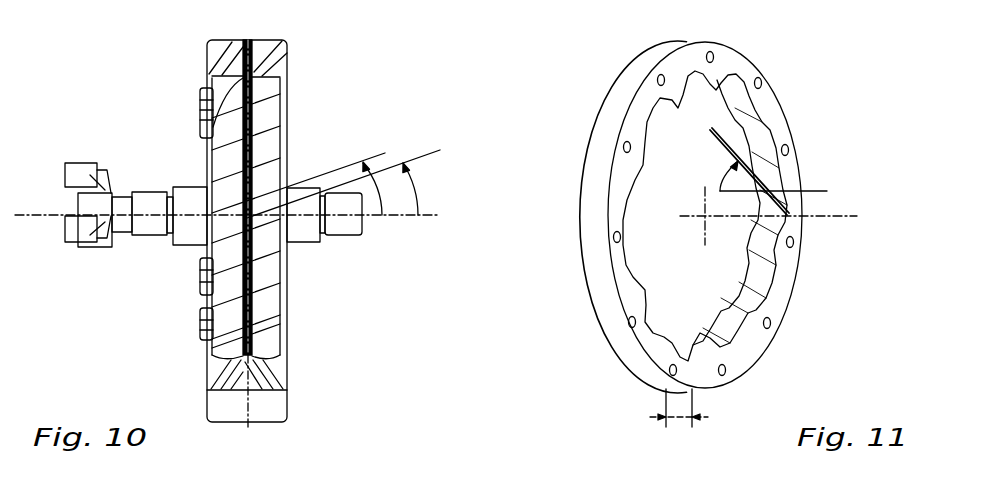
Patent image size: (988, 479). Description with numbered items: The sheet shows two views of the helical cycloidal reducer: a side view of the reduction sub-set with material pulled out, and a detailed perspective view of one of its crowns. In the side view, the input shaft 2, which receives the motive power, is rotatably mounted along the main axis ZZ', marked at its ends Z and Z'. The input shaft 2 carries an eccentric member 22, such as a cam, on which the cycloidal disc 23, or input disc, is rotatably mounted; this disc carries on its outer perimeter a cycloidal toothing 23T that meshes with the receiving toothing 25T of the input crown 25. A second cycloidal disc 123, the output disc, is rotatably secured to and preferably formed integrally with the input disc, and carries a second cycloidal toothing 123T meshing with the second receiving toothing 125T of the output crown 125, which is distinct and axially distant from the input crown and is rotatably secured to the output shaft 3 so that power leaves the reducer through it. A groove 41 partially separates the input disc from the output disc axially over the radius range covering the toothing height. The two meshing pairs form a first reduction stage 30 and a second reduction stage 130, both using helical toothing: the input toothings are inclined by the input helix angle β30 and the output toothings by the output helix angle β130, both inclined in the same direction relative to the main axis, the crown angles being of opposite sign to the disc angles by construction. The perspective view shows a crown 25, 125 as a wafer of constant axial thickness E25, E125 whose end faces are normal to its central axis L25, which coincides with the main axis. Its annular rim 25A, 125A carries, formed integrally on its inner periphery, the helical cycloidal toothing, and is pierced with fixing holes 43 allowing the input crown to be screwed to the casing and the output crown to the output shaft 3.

In FIG. 10, the input shaft 2 is at (84, 225).
In FIG. 10, the output shaft 3 is at (350, 229).
In FIG. 10, the eccentric member 22 is at (188, 246).
In FIG. 10, the cycloidal disc 23 is at (226, 300).
In FIG. 10, the cycloidal toothing 23T is at (224, 200).
In FIG. 10, the crown 25 is at (222, 57).
In FIG. 11, the crown 25 is at (745, 212).
In FIG. 10, the receiving toothing 25T is at (205, 128).
In FIG. 11, the receiving toothing 25T is at (739, 184).
In FIG. 11, the annular rim 25A is at (765, 215).
In FIG. 10, the first reduction stage 30 is at (296, 308).
In FIG. 10, the groove 41 is at (258, 93).
In FIG. 11, the fixing holes 43 is at (624, 144).
In FIG. 10, the second cycloidal disc 123 is at (265, 142).
In FIG. 10, the second cycloidal toothing 123T is at (270, 222).
In FIG. 10, the second crown 125 is at (278, 380).
In FIG. 11, the second crown 125 is at (788, 69).
In FIG. 10, the second cycloidal receiving toothing 125T is at (272, 352).
In FIG. 11, the second cycloidal receiving toothing 125T is at (719, 88).
In FIG. 11, the annular rim 125A is at (762, 108).
In FIG. 10, the second reduction stage 130 is at (343, 306).
In FIG. 10, the main axis end point Z is at (226, 203).
In FIG. 10, the main axis end point Z' is at (432, 204).
In FIG. 11, the main axis ZZ' is at (791, 240).
In FIG. 11, the central axis L25 is at (791, 240).
In FIG. 11, the thickness E25 is at (624, 425).
In FIG. 11, the thickness E125 is at (684, 420).